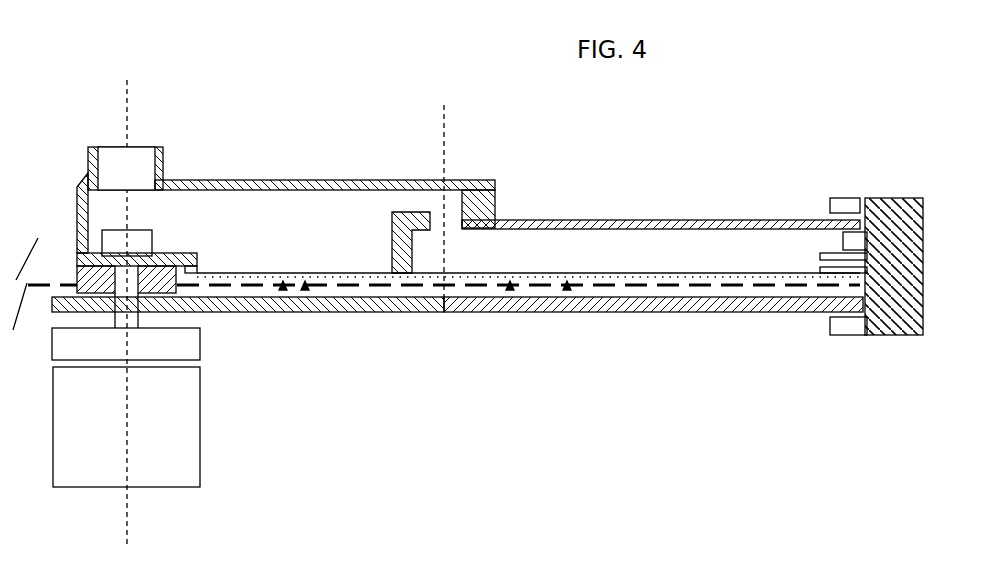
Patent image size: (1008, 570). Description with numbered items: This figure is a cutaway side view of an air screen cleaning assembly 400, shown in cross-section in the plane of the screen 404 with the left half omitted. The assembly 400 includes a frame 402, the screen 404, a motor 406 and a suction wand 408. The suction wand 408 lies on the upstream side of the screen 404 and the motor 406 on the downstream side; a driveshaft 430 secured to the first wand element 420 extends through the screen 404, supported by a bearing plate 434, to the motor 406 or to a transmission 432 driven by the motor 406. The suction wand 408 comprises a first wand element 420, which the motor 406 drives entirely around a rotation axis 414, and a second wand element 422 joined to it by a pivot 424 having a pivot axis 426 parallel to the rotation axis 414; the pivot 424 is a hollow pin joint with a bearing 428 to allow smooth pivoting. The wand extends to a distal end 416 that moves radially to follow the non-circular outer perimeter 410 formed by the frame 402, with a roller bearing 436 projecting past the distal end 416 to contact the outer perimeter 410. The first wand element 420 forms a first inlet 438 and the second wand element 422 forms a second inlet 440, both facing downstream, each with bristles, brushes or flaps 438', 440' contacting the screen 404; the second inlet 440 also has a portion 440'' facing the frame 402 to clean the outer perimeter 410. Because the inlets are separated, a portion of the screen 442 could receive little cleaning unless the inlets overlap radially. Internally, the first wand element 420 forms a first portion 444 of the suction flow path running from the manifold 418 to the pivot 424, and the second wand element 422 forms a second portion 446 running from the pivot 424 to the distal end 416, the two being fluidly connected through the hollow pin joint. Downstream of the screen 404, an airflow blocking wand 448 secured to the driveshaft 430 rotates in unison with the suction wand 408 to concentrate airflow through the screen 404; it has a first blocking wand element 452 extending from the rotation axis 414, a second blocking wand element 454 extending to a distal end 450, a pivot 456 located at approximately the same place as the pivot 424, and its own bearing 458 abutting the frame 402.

The air screen cleaning assembly 400 is at (372, 55).
The frame 402 is at (893, 197).
The screen 404 is at (684, 315).
The motor 406 is at (180, 433).
The suction wand 408 is at (560, 210).
The non-circular outer perimeter 410 is at (858, 202).
The rotation axis 414 is at (130, 103).
The distal end 416 is at (840, 213).
The manifold 418 is at (166, 170).
The first wand element 420 is at (296, 180).
The second wand element 422 is at (700, 220).
The pivot 424 is at (466, 188).
The pivot axis 426 is at (447, 132).
The bearing 428 is at (470, 220).
The driveshaft 430 is at (115, 318).
The transmission 432 is at (187, 347).
The bearing plate 434 is at (77, 270).
The roller bearing 436 is at (830, 207).
The first inlet 438 is at (307, 357).
The bristles, brushes or flaps 438' is at (339, 349).
The second inlet 440 is at (444, 330).
The bristles, brushes or flaps 440' is at (493, 361).
The portion of second inlet 440'' is at (757, 183).
The portion of the screen 442 is at (423, 300).
The first portion of the suction flow path 444 is at (325, 210).
The second portion of the suction flow path 446 is at (610, 242).
The airflow blocking wand 448 is at (583, 322).
The distal end of airflow blocking wand 450 is at (820, 307).
The first blocking wand element 452 is at (360, 313).
The second blocking wand element 454 is at (743, 313).
The pivot of airflow blocking wand 456 is at (444, 300).
The bearing of airflow blocking wand 458 is at (840, 335).